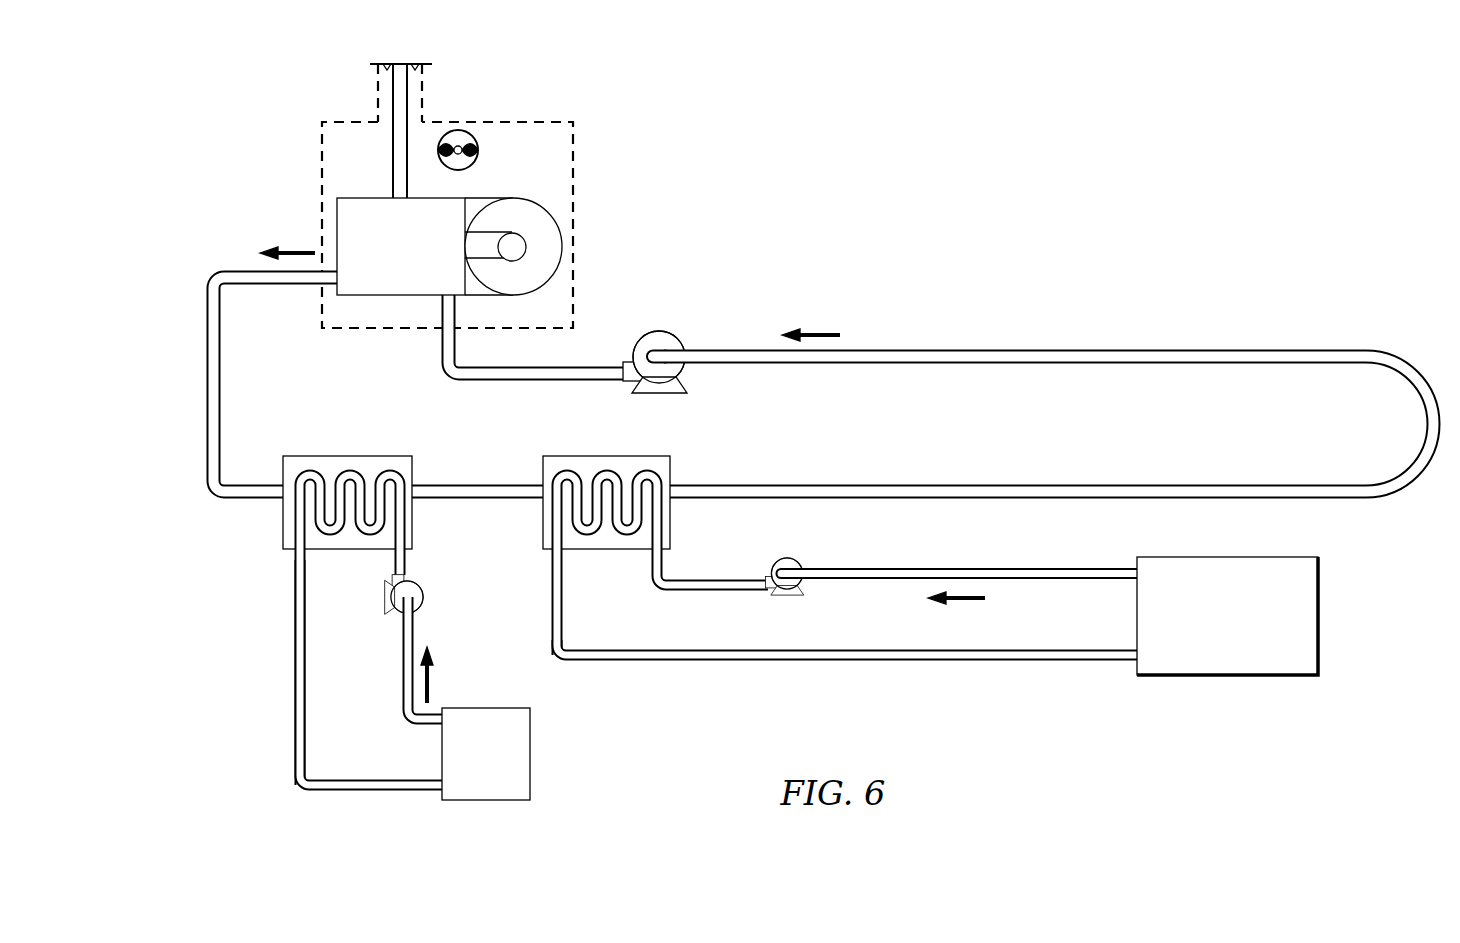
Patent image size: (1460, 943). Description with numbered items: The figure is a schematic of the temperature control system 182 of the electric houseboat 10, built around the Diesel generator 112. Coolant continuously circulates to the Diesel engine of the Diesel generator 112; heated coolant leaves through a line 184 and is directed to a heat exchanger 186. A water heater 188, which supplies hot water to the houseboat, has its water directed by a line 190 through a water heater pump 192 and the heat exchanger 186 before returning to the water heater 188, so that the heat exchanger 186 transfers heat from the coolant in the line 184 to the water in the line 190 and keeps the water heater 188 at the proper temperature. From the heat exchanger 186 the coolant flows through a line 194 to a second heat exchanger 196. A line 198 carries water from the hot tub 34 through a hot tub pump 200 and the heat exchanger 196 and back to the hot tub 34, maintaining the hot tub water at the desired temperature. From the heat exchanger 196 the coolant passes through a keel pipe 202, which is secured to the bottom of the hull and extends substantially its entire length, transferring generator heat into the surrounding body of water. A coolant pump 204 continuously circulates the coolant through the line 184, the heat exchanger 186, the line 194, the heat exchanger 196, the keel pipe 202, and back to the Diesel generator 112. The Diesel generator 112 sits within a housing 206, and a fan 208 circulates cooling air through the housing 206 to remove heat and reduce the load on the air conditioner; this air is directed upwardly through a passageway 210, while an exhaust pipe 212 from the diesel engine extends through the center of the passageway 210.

The electric houseboat 10 is at (775, 430).
The hot tub 34 is at (1318, 610).
The Diesel generator 112 is at (370, 198).
The temperature control system 182 is at (775, 355).
The line 184 is at (235, 270).
The heat exchanger 186 is at (283, 512).
The water heater 188 is at (531, 753).
The line 190 is at (403, 676).
The water heater pump 192 is at (387, 597).
The line 194 is at (477, 486).
The heat exchanger 196 is at (673, 467).
The line 198 is at (1057, 567).
The hot tub pump 200 is at (800, 563).
The keel pipe 202 is at (1157, 349).
The coolant pump 204 is at (683, 343).
The housing 206 is at (312, 140).
The fan 208 is at (478, 150).
The passageway 210 is at (365, 86).
The exhaust pipe 212 is at (407, 83).